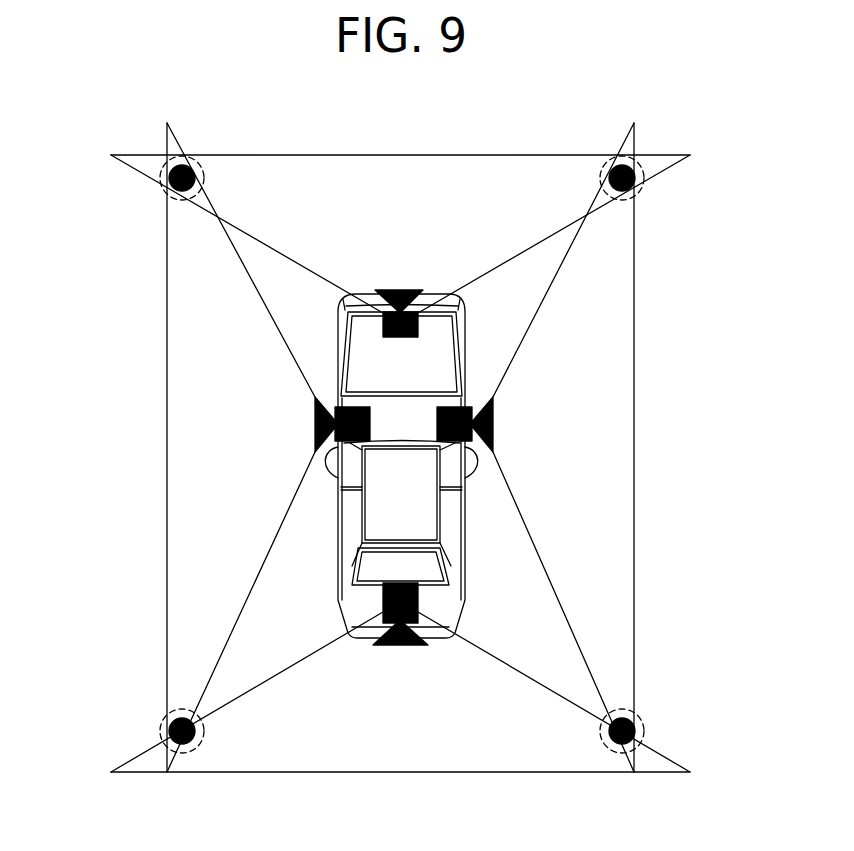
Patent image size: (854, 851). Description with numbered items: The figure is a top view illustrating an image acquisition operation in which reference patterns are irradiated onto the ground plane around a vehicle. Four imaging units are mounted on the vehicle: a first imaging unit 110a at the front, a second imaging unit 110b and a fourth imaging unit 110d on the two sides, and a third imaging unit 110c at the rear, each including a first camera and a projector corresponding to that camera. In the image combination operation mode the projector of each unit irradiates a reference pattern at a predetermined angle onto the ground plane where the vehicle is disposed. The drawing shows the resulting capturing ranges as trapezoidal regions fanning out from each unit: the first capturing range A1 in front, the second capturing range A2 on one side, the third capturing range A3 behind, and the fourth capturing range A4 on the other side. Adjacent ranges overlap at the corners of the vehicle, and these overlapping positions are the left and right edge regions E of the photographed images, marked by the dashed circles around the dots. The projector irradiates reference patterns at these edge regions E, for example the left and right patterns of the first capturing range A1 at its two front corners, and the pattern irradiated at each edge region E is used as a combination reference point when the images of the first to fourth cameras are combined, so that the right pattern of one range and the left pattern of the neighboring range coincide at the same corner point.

The first imaging unit 110a is at (416, 319).
The second imaging unit 110b is at (483, 450).
The third imaging unit 110c is at (403, 643).
The fourth imaging unit 110d is at (322, 450).
The first capturing range A1 is at (497, 155).
The second capturing range A2 is at (634, 525).
The third capturing range A3 is at (523, 772).
The fourth capturing range A4 is at (167, 555).
The edge region E is at (204, 180).